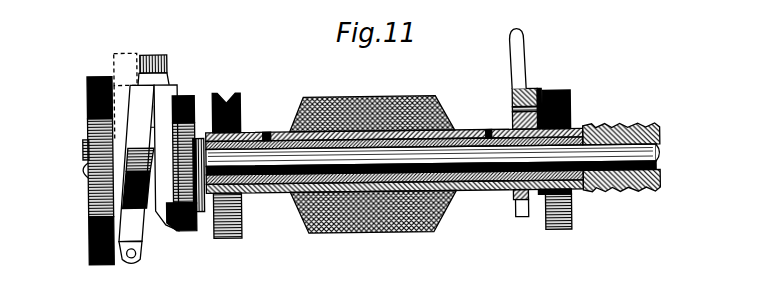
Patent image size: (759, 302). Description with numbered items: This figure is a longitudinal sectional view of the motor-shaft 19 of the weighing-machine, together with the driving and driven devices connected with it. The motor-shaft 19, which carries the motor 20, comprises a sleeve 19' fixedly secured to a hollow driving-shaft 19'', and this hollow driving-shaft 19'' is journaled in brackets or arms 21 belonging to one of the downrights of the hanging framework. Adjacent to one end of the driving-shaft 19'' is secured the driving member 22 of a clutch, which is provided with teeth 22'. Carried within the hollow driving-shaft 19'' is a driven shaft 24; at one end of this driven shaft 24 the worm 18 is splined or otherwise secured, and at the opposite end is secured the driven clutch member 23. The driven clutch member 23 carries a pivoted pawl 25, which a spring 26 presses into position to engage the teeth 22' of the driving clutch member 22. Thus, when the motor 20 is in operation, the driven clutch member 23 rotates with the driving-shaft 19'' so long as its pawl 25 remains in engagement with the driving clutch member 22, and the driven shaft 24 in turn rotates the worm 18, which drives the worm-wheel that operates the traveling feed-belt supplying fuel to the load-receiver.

The worm 18 is at (623, 184).
The motor-shaft 19 is at (393, 126).
The sleeve 19' is at (501, 79).
The hollow driving-shaft 19'' is at (395, 202).
The motor 20 is at (347, 225).
The brackets or arms 21 is at (233, 226).
The driving clutch member 22 is at (182, 177).
The clutch teeth 22' is at (146, 179).
The driven clutch member 23 is at (85, 224).
The driven shaft 24 is at (77, 158).
The pivoted pawl 25 is at (152, 73).
The spring 26 is at (98, 94).